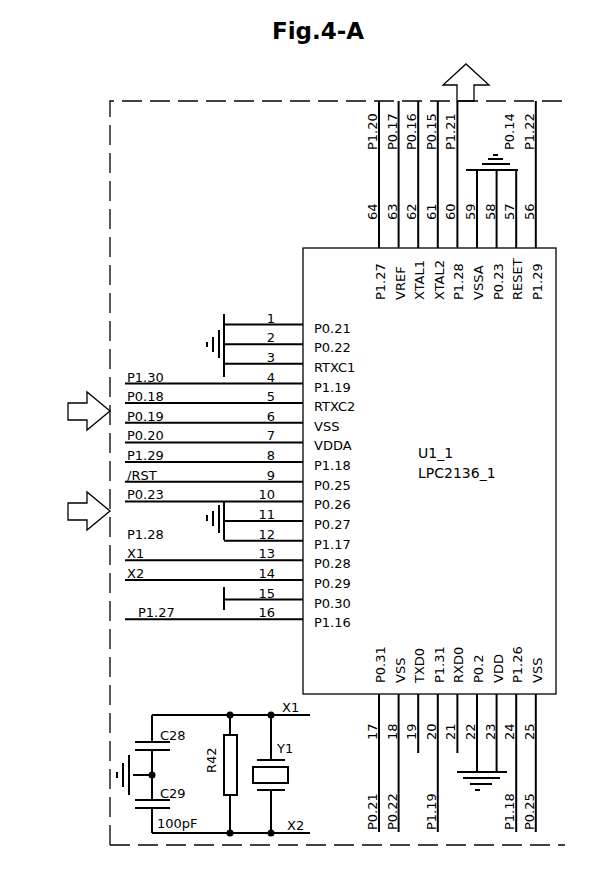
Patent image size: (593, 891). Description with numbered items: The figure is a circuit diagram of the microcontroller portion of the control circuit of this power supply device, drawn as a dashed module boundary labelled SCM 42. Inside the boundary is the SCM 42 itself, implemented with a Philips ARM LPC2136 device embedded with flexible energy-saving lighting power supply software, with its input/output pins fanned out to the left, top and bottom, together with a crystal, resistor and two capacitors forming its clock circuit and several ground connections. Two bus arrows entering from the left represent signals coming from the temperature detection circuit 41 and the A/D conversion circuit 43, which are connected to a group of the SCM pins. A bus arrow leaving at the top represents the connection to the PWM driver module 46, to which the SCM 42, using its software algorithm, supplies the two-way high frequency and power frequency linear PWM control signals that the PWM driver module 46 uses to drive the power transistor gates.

The temperature detection circuit 41 is at (66, 414).
The SCM 42 is at (242, 101).
The A/D conversion circuit 43 is at (66, 512).
The PWM driver module 46 is at (462, 64).